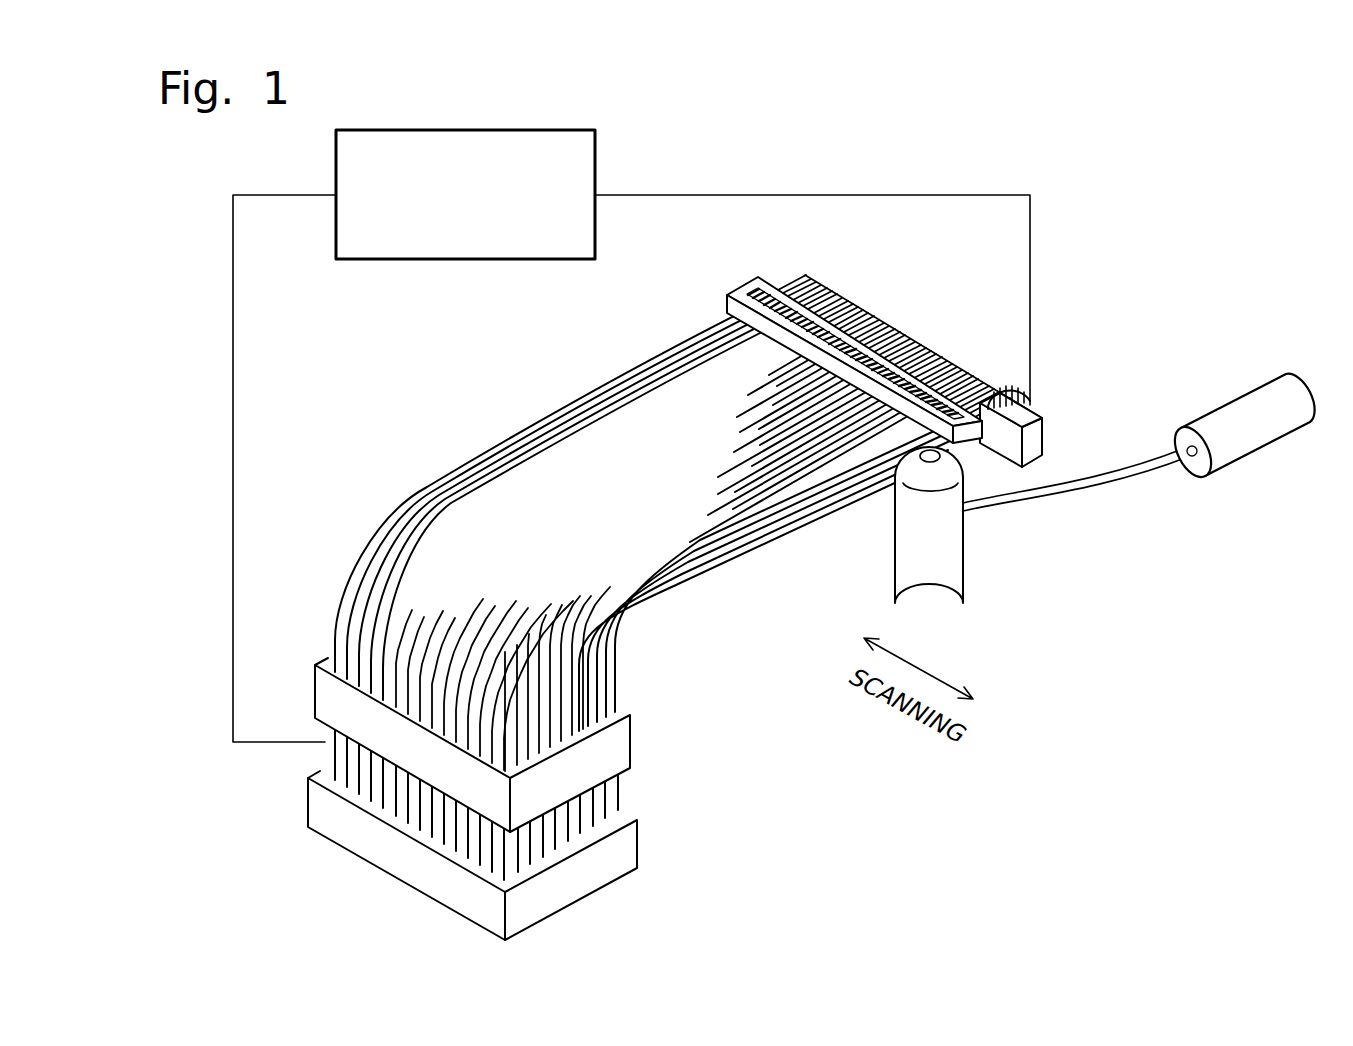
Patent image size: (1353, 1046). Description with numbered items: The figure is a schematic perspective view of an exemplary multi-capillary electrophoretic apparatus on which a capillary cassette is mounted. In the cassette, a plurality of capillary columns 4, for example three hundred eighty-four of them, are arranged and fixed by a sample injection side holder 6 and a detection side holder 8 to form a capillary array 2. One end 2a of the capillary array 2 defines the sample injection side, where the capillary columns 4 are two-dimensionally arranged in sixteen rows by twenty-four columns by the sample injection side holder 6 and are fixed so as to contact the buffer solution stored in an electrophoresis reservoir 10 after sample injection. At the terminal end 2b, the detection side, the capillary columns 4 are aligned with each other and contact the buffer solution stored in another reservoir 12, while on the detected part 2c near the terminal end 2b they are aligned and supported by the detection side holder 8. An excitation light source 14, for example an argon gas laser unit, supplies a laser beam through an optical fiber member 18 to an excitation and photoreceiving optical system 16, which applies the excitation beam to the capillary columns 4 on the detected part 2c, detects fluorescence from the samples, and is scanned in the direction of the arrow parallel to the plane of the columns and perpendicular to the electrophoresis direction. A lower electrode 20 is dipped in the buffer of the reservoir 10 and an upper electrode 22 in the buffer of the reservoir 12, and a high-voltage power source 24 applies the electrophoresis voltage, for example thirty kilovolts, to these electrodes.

The capillary array 2 is at (594, 388).
The end of the capillary array 2a is at (357, 781).
The terminal end 2b is at (1023, 392).
The detected part 2c is at (836, 300).
The capillary columns 4 is at (498, 442).
The sample injection side holder 6 is at (625, 745).
The detection side holder 8 is at (748, 283).
The electrophoresis reservoir 10 is at (632, 847).
The reservoir 12 is at (1046, 437).
The excitation light source 14 is at (1262, 437).
The excitation and photoreceiving optical system 16 is at (957, 555).
The optical fiber member 18 is at (1107, 485).
The lower electrode 20 is at (325, 752).
The upper electrode 22 is at (1040, 386).
The high-voltage power source 24 is at (597, 153).